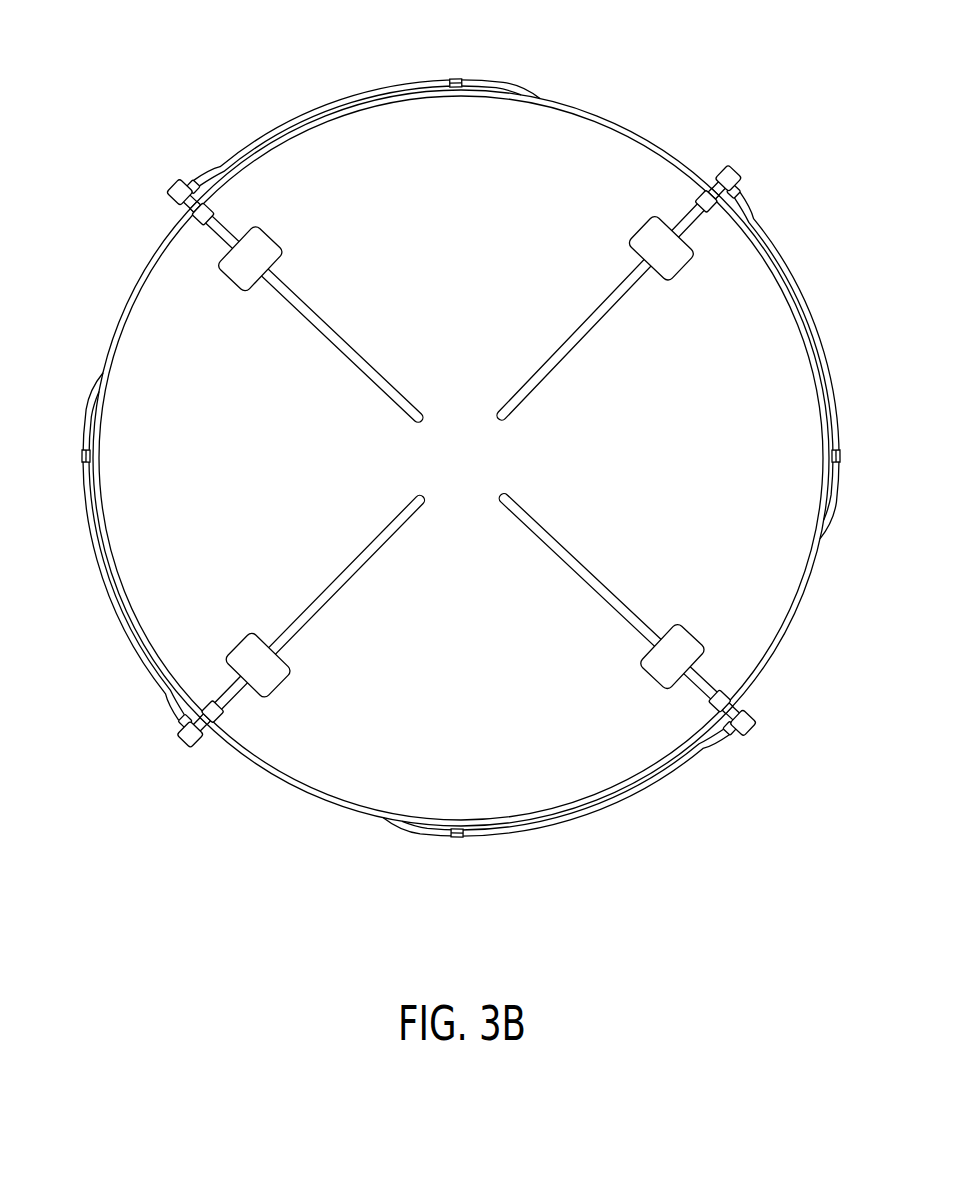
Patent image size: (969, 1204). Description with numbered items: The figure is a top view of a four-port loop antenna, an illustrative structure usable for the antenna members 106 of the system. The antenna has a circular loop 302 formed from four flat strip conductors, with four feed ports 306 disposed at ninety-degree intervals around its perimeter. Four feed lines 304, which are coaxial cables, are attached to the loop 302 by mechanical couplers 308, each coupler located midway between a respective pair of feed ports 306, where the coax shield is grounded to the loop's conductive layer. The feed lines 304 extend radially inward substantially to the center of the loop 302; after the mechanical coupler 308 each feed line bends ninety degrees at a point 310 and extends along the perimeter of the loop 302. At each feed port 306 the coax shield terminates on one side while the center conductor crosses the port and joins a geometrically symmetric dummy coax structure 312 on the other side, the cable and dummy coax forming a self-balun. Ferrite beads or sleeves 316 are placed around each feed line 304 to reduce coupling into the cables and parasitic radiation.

The antenna members 106 is at (323, 905).
The loop 302 is at (616, 125).
The feed lines 304 is at (327, 323).
The feed ports 306 is at (456, 81).
The mechanical couplers 308 is at (217, 212).
The bend point 310 is at (166, 182).
The dummy coax structure 312 is at (486, 81).
The ferrite beads or sleeves 316 is at (226, 295).